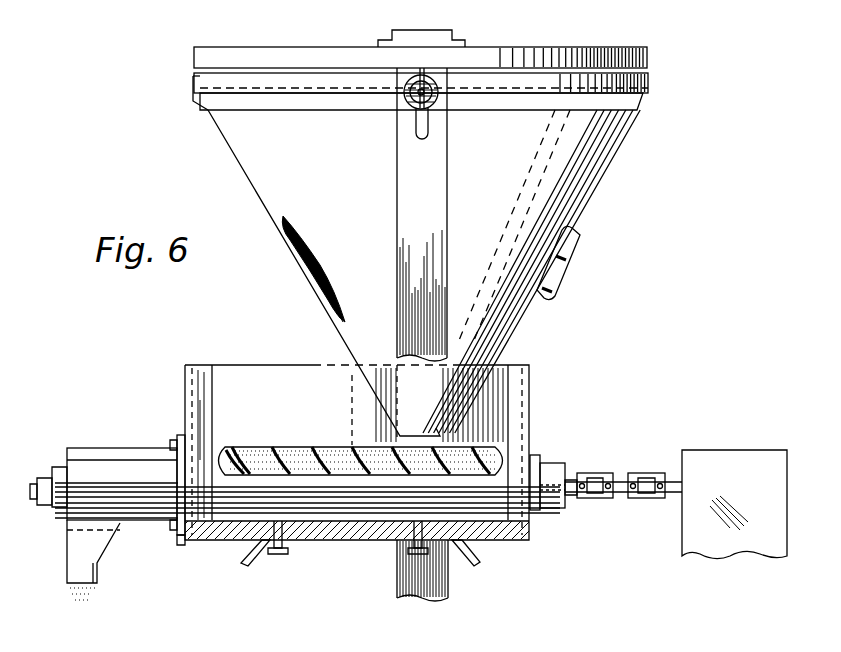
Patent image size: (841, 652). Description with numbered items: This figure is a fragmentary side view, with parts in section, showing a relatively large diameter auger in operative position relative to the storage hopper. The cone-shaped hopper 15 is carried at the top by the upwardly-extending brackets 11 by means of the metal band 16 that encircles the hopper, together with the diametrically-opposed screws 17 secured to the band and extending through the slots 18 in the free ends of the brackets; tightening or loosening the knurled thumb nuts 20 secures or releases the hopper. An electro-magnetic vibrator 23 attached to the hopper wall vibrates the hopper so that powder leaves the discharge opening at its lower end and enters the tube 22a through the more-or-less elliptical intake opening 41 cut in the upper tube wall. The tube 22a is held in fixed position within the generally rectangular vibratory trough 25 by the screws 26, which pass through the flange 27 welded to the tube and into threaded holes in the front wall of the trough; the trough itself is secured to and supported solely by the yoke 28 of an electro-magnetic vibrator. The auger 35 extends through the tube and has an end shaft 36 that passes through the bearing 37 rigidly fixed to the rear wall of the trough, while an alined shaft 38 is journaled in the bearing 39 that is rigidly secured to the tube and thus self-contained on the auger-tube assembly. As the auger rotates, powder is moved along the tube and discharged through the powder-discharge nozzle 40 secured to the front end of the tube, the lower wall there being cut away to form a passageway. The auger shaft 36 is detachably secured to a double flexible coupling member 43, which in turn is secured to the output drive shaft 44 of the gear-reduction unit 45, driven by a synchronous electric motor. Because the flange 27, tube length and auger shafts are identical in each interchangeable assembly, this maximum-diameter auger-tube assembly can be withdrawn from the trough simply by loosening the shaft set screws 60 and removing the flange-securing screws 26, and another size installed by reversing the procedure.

The brackets 11 is at (398, 214).
The hopper 15 is at (556, 262).
The metal band 16 is at (648, 95).
The screws 17 is at (408, 106).
The slots 18 is at (424, 140).
The knurled thumb nuts 20 is at (414, 130).
The tube 22a is at (118, 448).
The electro-magnetic vibrator 23 is at (565, 232).
The trough 25 is at (530, 405).
The screws 26 is at (178, 440).
The flange 27 is at (183, 547).
The yoke 28 is at (246, 562).
The auger 35 is at (297, 446).
The end shaft 36 is at (577, 478).
The bearing 37 is at (548, 468).
The alined shaft 38 is at (42, 478).
The bearing 39 is at (80, 448).
The powder-discharge nozzle 40 is at (92, 548).
The intake opening 41 is at (240, 458).
The double flexible coupling member 43 is at (632, 475).
The output drive shaft 44 is at (675, 480).
The gear-reduction unit 45 is at (735, 460).
The shaft set screws 60 is at (572, 495).